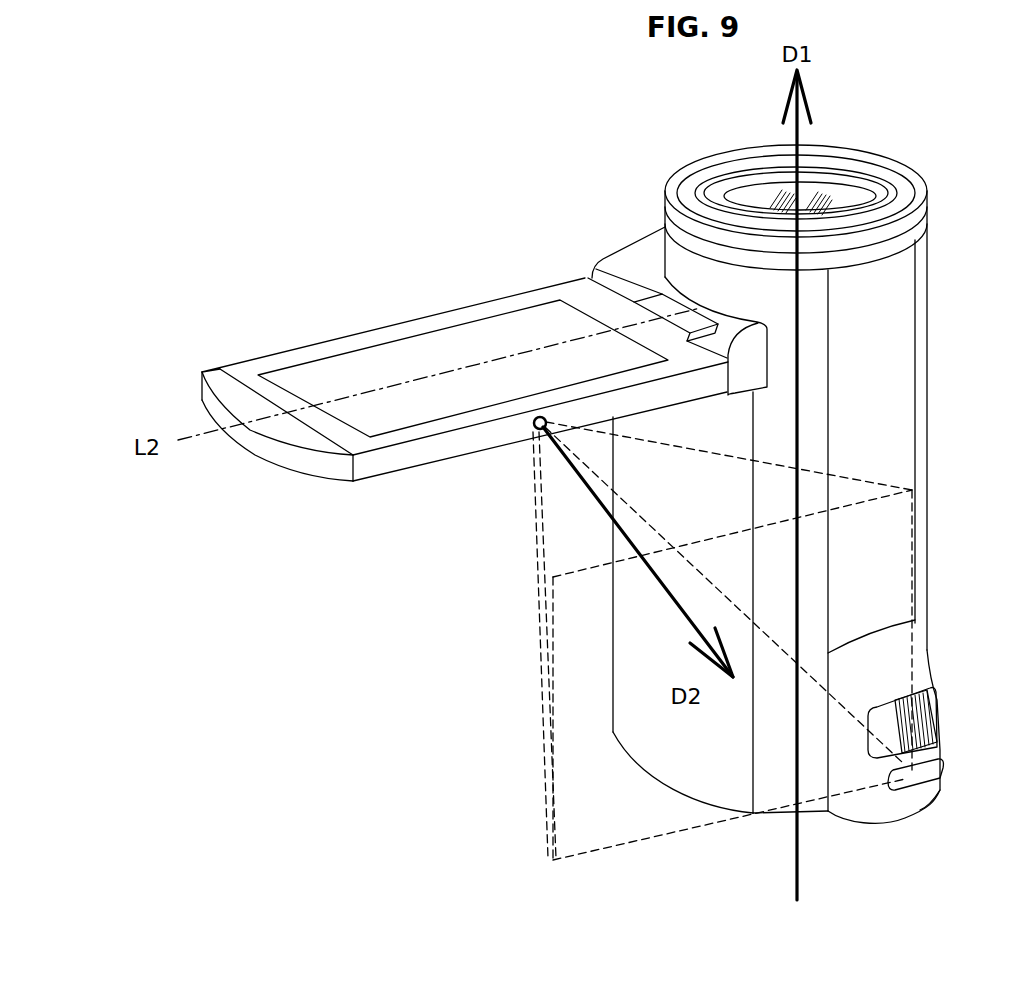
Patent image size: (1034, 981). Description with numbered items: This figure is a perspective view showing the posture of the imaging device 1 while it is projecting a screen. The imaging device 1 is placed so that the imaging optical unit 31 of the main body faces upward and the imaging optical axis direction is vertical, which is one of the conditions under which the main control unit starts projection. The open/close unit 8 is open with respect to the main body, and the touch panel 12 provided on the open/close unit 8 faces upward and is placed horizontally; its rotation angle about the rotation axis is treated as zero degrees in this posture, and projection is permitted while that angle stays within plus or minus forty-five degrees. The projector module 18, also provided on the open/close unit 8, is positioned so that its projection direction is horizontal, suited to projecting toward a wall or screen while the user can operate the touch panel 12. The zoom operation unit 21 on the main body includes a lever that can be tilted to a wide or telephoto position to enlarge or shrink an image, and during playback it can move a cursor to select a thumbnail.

The imaging device 1 is at (470, 175).
The open/close unit 8 is at (441, 305).
The touch panel 12 is at (323, 377).
The projector module 18 is at (533, 430).
The zoom operation unit 21 is at (937, 705).
The imaging optical unit 31 is at (822, 190).